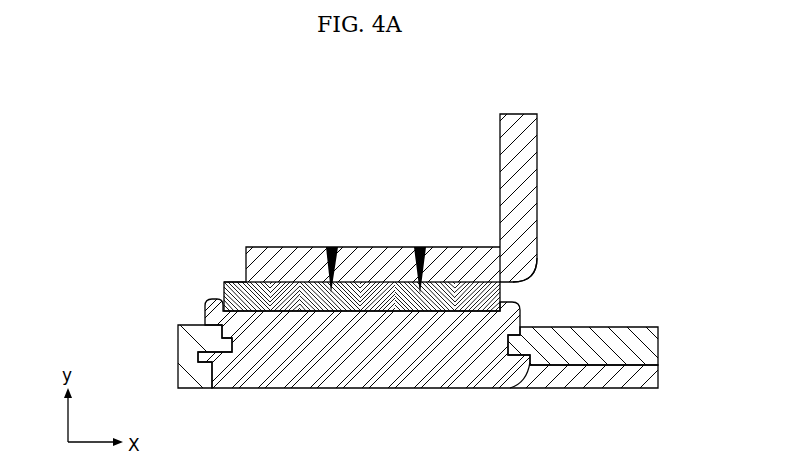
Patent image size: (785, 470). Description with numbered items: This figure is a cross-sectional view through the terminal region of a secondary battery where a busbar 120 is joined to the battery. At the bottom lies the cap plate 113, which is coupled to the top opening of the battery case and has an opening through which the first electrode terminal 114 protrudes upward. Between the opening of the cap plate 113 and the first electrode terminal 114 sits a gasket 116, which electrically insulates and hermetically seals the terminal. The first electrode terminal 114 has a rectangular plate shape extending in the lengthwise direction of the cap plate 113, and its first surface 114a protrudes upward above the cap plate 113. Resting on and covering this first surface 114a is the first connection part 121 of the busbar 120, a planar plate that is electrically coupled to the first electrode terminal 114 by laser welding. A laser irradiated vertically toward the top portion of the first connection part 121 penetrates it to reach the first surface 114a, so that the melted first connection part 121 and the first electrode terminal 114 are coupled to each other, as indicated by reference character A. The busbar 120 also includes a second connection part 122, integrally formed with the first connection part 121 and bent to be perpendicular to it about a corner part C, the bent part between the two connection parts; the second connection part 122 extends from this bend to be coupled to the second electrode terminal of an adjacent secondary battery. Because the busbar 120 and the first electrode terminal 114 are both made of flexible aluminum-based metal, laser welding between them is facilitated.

The cap plate 113 is at (653, 345).
The first electrode terminal 114 is at (495, 292).
The first surface 114a is at (236, 281).
The gasket 116 is at (411, 378).
The busbar 120 is at (391, 195).
The first connection part 121 is at (442, 247).
The second connection part 122 is at (518, 118).
The weld coupling region A is at (332, 247).
The corner part C is at (530, 277).